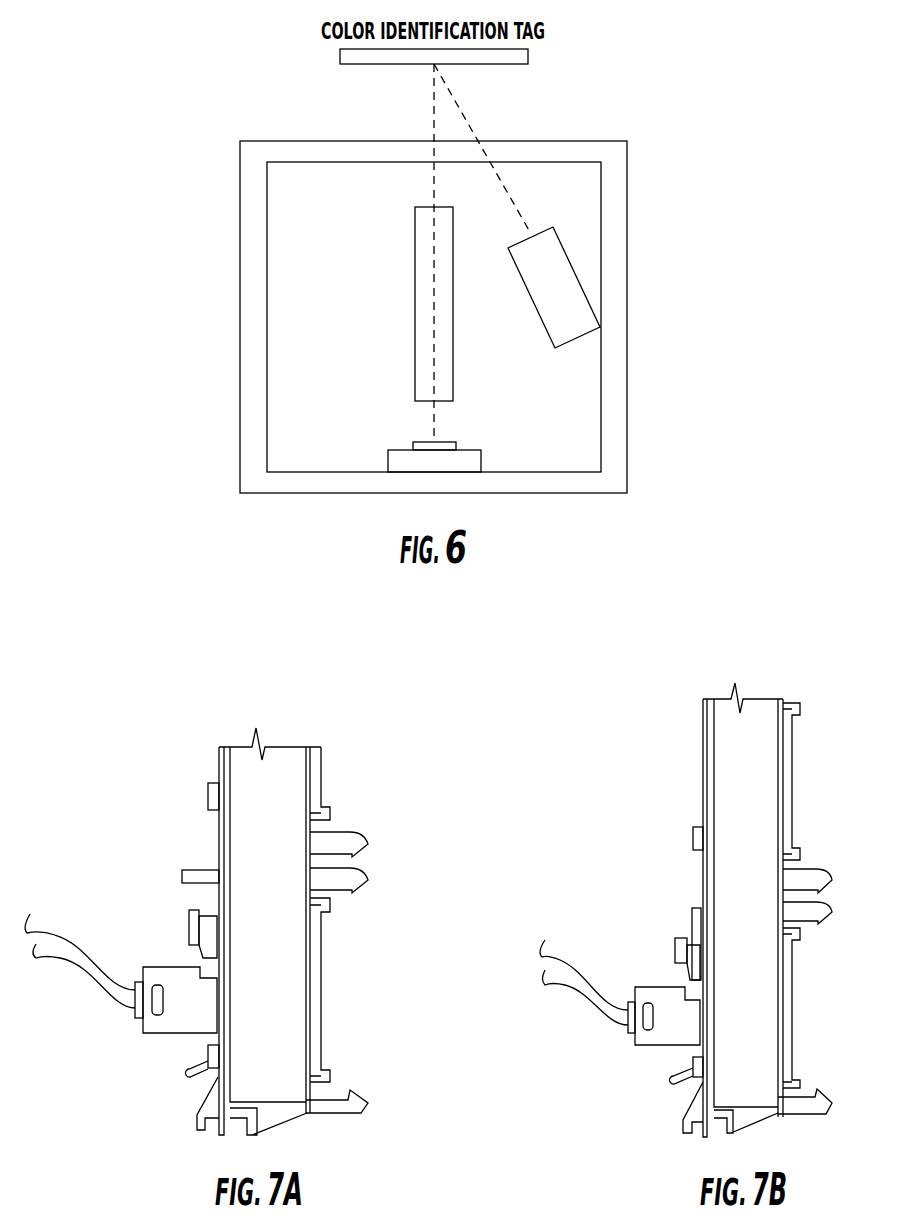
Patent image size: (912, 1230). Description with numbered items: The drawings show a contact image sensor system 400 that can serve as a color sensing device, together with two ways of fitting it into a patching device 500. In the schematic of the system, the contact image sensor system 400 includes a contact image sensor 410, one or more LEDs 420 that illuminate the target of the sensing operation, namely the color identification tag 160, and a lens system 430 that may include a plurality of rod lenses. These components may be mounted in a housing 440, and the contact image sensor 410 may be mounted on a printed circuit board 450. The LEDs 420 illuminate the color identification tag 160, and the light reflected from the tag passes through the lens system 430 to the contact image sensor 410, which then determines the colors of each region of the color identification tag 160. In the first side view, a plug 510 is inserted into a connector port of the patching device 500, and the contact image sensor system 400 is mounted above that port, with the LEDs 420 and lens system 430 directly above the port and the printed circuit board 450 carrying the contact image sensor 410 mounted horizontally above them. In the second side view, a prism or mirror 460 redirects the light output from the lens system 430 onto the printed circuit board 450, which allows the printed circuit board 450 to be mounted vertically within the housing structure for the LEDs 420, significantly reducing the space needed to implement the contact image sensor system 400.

In FIG. 6, the color identification tag 160 is at (528, 57).
In FIG. 6, the contact image sensor system 400 is at (205, 203).
In FIG. 6, the contact image sensor 410 is at (448, 442).
In FIG. 7A, the contact image sensor 410 is at (157, 840).
In FIG. 7B, the contact image sensor 410 is at (649, 899).
In FIG. 6, the LEDs 420 is at (527, 295).
In FIG. 7A, the LEDs 420 is at (210, 933).
In FIG. 7B, the LEDs 420 is at (677, 975).
In FIG. 6, the lens system 430 is at (415, 267).
In FIG. 7A, the lens system 430 is at (189, 927).
In FIG. 7B, the lens system 430 is at (673, 957).
In FIG. 6, the housing 440 is at (627, 173).
In FIG. 6, the printed circuit board 450 is at (387, 460).
In FIG. 7A, the printed circuit board 450 is at (180, 875).
In FIG. 7B, the printed circuit board 450 is at (693, 907).
In FIG. 7B, the prism or mirror 460 is at (676, 930).
In FIG. 7A, the patching device 500 is at (287, 772).
In FIG. 7B, the patching device 500 is at (755, 735).
In FIG. 7A, the plug 510 is at (148, 1022).
In FIG. 7B, the plug 510 is at (640, 1035).